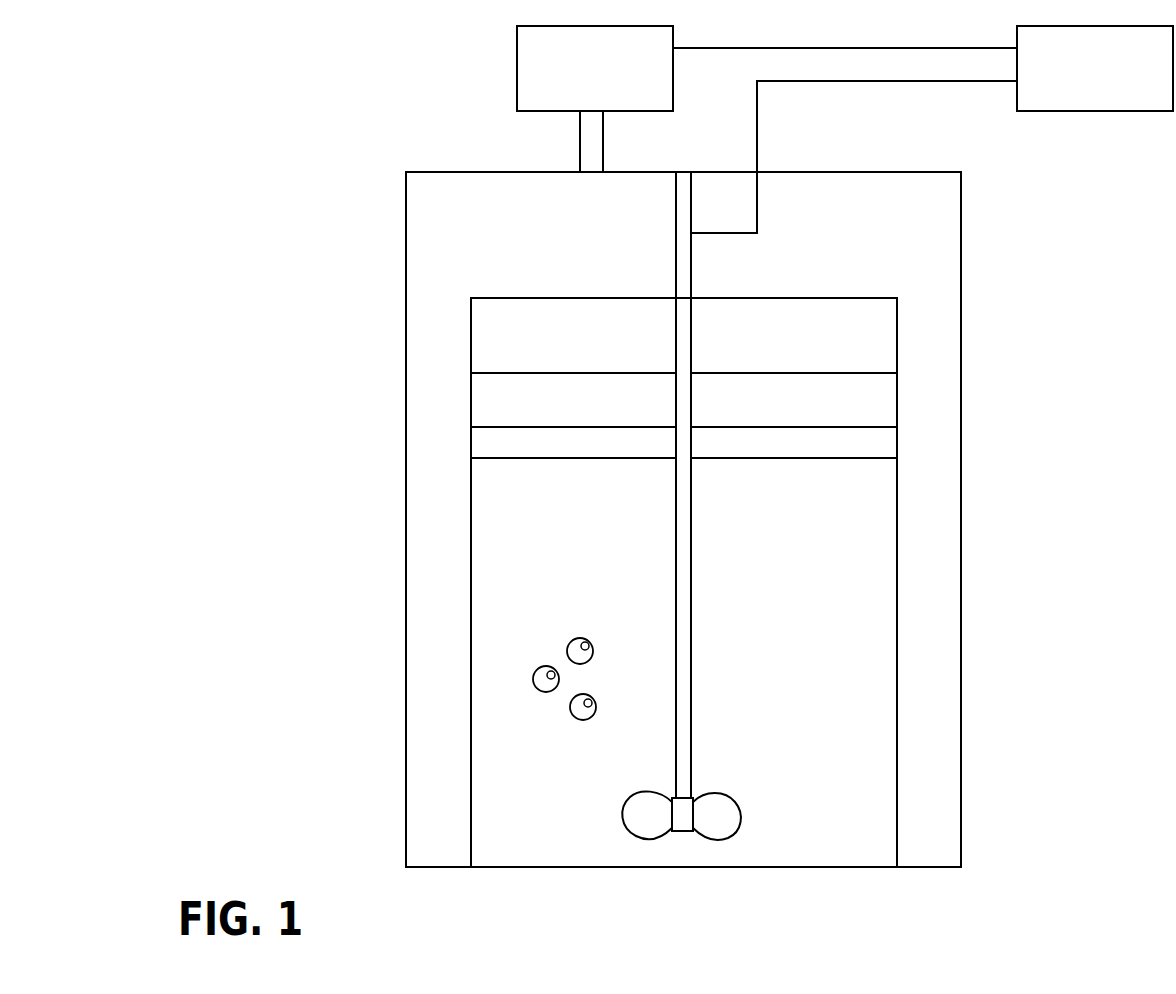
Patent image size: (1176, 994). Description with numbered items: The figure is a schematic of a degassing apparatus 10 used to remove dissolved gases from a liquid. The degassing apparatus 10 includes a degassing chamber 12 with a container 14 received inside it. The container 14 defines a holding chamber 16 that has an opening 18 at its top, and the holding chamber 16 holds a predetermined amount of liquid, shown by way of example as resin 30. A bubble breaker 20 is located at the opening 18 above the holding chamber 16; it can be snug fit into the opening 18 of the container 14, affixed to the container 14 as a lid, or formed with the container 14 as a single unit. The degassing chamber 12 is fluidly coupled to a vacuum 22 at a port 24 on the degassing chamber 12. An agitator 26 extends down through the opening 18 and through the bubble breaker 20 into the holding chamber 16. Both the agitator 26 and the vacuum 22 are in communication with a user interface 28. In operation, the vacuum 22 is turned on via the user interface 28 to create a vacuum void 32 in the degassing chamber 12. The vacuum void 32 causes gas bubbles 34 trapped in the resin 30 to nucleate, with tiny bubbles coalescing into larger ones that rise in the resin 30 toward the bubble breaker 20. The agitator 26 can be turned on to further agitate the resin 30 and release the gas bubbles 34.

The degassing apparatus 10 is at (299, 42).
The degassing chamber 12 is at (962, 233).
The container 14 is at (899, 326).
The holding chamber 16 is at (841, 569).
The opening 18 is at (496, 294).
The bubble breaker 20 is at (899, 397).
The vacuum 22 is at (602, 79).
The port 24 is at (587, 172).
The agitator 26 is at (693, 737).
The user interface 28 is at (1110, 79).
The resin 30 is at (781, 579).
The vacuum void 32 is at (846, 245).
The gas bubbles 34 is at (582, 721).